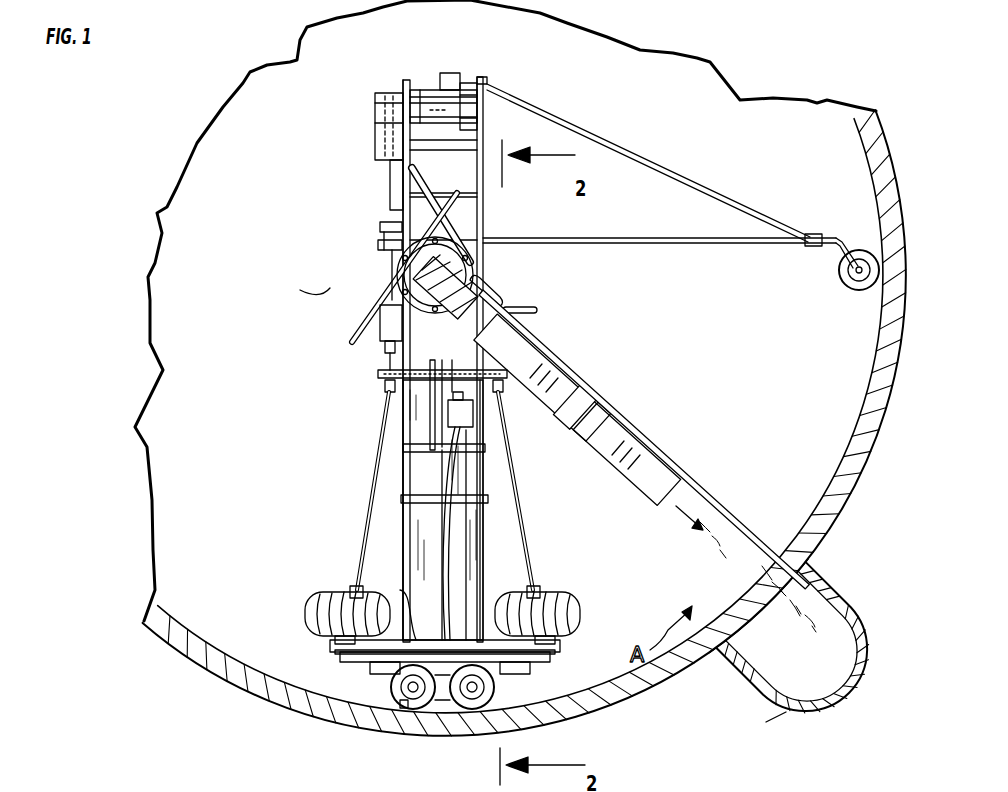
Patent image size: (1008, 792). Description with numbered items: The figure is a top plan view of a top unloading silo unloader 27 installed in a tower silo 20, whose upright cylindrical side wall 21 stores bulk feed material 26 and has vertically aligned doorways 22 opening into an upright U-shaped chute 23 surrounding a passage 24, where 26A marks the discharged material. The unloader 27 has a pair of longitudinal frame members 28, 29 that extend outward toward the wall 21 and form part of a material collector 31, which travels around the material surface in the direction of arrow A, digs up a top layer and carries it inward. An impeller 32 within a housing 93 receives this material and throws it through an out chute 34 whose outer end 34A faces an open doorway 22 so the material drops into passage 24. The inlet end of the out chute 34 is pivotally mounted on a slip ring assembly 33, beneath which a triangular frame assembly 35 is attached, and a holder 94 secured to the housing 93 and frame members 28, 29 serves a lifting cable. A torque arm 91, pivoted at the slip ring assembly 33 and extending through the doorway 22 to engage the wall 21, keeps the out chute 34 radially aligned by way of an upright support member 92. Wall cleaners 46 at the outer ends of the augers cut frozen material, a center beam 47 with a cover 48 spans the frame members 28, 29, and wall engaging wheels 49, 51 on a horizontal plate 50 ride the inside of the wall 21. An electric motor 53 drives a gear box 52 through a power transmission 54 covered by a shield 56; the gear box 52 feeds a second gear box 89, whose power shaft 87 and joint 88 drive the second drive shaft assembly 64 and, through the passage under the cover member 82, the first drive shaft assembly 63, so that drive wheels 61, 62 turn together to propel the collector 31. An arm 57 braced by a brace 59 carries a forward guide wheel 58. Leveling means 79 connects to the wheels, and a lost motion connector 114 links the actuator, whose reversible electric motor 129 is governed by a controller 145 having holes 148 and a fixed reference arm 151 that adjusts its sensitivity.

The tower silo 20 is at (886, 132).
The side wall 21 is at (892, 196).
The doorways 22 is at (768, 608).
The chute 23 is at (788, 716).
The passage 24 is at (862, 604).
The feed material 26 is at (795, 340).
The excavated material 26A is at (736, 562).
The top unloading silo unloader 27 is at (328, 138).
The longitudinal frame member 28 is at (486, 86).
The longitudinal frame member 29 is at (408, 78).
The material collector 31 is at (504, 538).
The impeller 32 is at (486, 306).
The slip ring assembly 33 is at (490, 244).
The out chute 34 is at (648, 436).
The outer end of out chute 34A is at (666, 512).
The triangular frame assembly 35 is at (436, 190).
The wall cleaner 46 is at (422, 728).
The center beam 47 is at (440, 470).
The cover 48 is at (478, 570).
The wall engaging wheel 49 is at (392, 708).
The horizontal plate 50 is at (450, 722).
The wall engaging wheel 51 is at (494, 690).
The gear box 52 is at (468, 210).
The electric motor 53 is at (445, 98).
The power transmission 54 is at (380, 170).
The shield 56 is at (378, 104).
The arm 57 is at (664, 246).
The forward guide wheel 58 is at (856, 256).
The brace 59 is at (742, 212).
The drive wheel 61 is at (580, 590).
The drive wheel 62 is at (316, 626).
The drive shaft assembly 63 is at (530, 464).
The drive shaft assembly 64 is at (360, 500).
The leveling means 79 is at (378, 672).
The cover member 82 is at (378, 378).
The power shaft 87 is at (380, 244).
The joint 88 is at (376, 348).
The gear box 89 is at (380, 216).
The torque arm 91 is at (736, 518).
The support member 92 is at (594, 370).
The housing 93 is at (404, 348).
The holder 94 is at (416, 430).
The lost motion connector 114 is at (548, 656).
The reversible electric motor 129 is at (398, 612).
The controller 145 is at (478, 414).
The holes 148 is at (436, 538).
The reference arm 151 is at (512, 330).